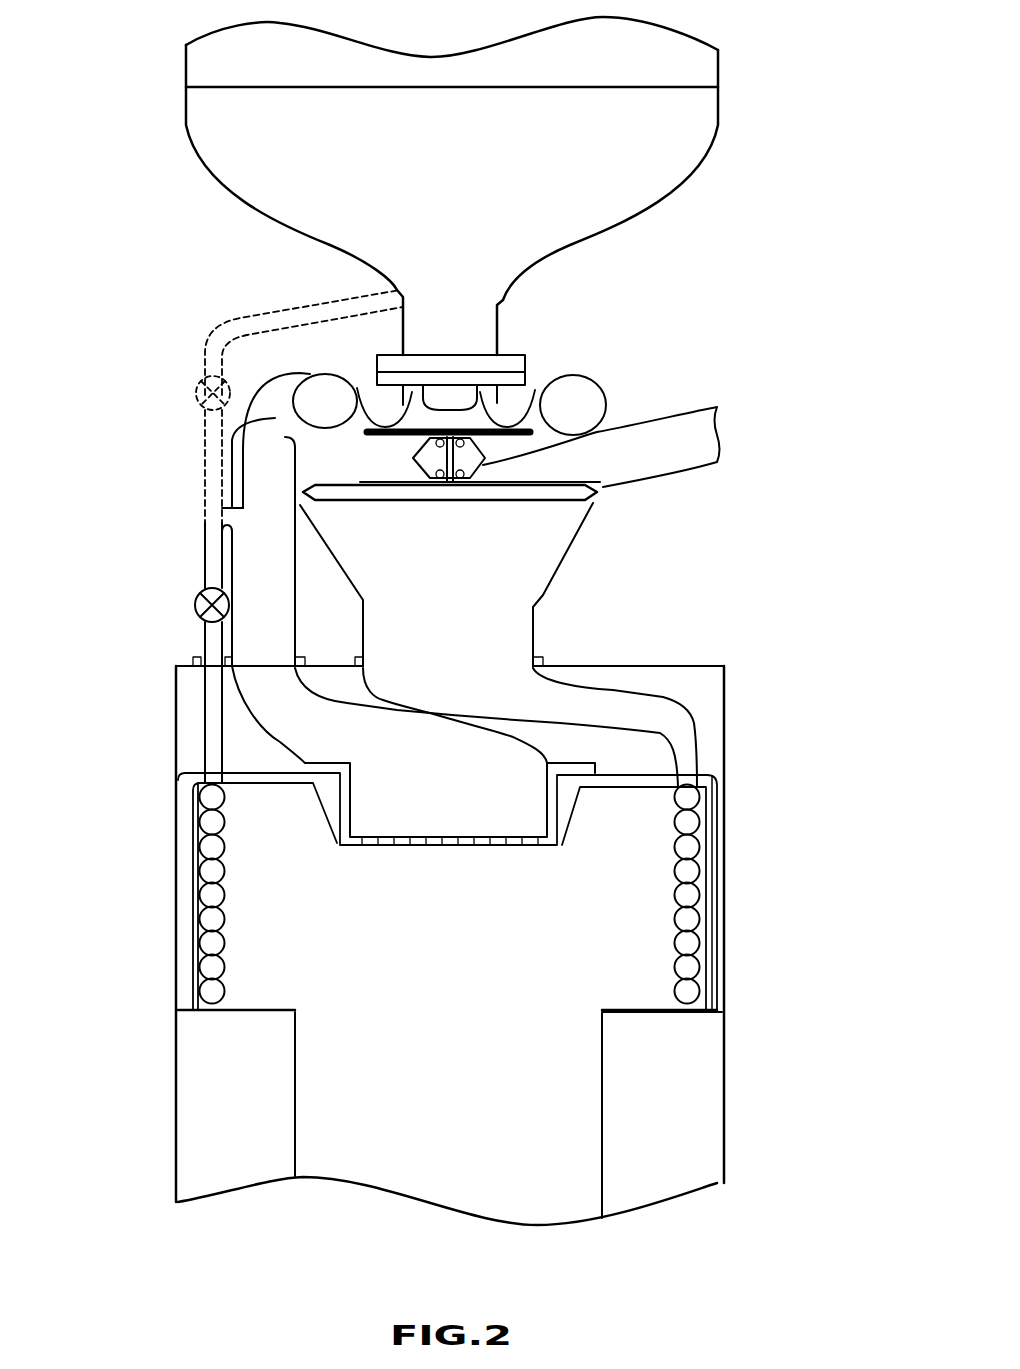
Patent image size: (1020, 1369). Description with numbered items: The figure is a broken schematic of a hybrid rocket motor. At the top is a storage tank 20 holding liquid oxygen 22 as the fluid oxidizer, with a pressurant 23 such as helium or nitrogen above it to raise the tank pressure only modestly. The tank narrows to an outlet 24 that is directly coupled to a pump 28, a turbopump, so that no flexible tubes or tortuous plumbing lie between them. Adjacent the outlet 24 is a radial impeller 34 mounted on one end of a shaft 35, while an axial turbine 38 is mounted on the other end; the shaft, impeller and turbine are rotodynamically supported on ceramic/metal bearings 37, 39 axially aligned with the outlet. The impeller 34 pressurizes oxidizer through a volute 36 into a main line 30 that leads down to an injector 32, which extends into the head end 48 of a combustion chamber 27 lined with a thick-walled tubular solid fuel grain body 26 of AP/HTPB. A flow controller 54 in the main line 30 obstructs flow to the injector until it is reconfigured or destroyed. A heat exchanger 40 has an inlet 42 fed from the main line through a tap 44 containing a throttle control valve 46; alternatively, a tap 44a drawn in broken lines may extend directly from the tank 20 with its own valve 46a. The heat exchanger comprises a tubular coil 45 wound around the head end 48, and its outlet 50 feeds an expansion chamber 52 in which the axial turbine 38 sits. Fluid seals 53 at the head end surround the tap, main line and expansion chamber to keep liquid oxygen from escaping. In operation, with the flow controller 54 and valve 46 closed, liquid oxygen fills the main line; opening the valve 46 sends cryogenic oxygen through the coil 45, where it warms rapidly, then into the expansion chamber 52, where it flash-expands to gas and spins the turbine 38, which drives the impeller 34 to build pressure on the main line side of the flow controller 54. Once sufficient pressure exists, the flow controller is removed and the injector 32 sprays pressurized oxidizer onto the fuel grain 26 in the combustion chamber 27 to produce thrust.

The storage tank 20 is at (481, 186).
The liquid oxygen 22 is at (591, 168).
The pressurant 23 is at (612, 77).
The outlet 24 is at (483, 360).
The solid fuel grain body 26 is at (717, 1080).
The combustion chamber 27 is at (464, 1128).
The pump 28 is at (507, 410).
The main line 30 is at (240, 548).
The injector 32 is at (430, 837).
The radial impeller 34 is at (400, 403).
The shaft 35 is at (413, 458).
The volute 36 is at (597, 395).
The bearing 37 is at (377, 421).
The axial turbine 38 is at (573, 500).
The bearing 39 is at (425, 473).
The heat exchanger 40 is at (235, 772).
The inlet 42 is at (200, 723).
The tap 44 is at (207, 523).
The tap 44a is at (327, 297).
The tubular coil 45 is at (685, 873).
The throttle control valve 46 is at (195, 603).
The valve 46a is at (197, 390).
The head end 48 is at (467, 923).
The heat exchanger outlet 50 is at (677, 730).
The expansion chamber 52 is at (543, 590).
The fluid seals 53 is at (197, 658).
The flow controller 54 is at (267, 660).